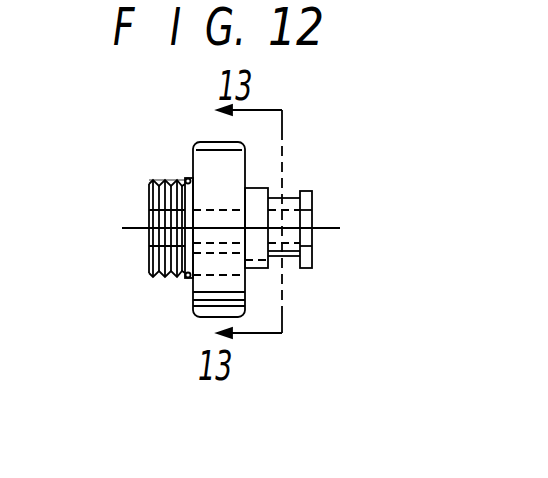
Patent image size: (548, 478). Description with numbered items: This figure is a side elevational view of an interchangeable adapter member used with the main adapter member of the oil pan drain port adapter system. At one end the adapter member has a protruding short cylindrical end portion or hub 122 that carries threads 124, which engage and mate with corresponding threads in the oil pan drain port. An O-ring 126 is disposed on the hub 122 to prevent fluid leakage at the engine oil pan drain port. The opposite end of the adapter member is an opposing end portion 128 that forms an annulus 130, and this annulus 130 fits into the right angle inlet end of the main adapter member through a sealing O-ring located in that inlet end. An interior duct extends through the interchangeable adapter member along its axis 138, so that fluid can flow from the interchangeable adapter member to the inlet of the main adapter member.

The hub 122 is at (149, 259).
The threads 124 is at (162, 183).
The O-ring 126 is at (188, 178).
The opposing end portion 128 is at (311, 199).
The annulus 130 is at (288, 257).
The axis 138 is at (325, 232).